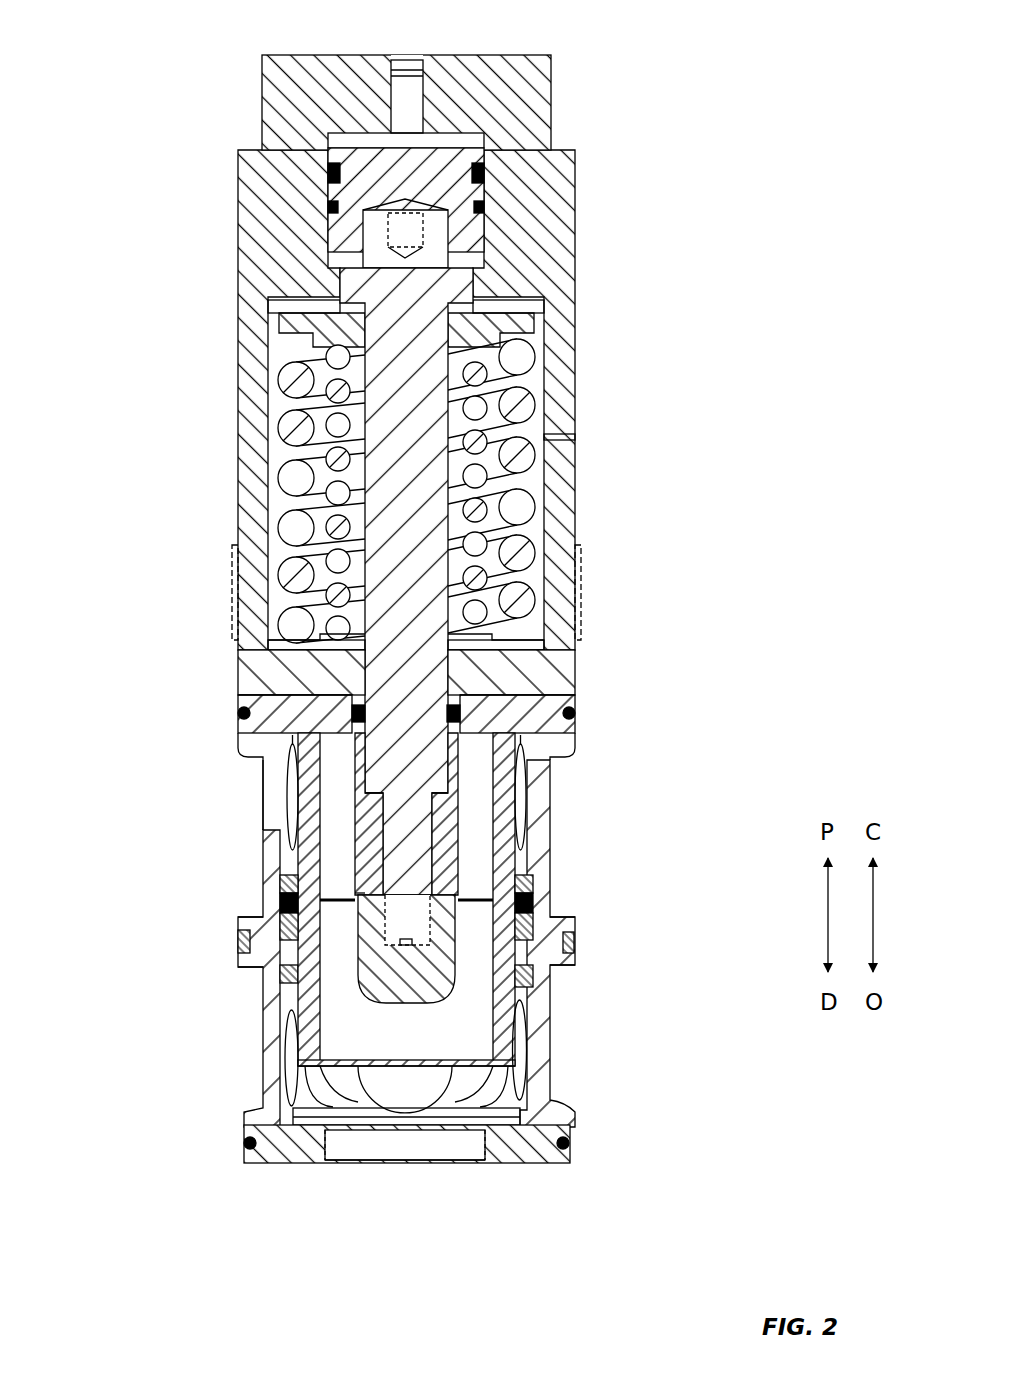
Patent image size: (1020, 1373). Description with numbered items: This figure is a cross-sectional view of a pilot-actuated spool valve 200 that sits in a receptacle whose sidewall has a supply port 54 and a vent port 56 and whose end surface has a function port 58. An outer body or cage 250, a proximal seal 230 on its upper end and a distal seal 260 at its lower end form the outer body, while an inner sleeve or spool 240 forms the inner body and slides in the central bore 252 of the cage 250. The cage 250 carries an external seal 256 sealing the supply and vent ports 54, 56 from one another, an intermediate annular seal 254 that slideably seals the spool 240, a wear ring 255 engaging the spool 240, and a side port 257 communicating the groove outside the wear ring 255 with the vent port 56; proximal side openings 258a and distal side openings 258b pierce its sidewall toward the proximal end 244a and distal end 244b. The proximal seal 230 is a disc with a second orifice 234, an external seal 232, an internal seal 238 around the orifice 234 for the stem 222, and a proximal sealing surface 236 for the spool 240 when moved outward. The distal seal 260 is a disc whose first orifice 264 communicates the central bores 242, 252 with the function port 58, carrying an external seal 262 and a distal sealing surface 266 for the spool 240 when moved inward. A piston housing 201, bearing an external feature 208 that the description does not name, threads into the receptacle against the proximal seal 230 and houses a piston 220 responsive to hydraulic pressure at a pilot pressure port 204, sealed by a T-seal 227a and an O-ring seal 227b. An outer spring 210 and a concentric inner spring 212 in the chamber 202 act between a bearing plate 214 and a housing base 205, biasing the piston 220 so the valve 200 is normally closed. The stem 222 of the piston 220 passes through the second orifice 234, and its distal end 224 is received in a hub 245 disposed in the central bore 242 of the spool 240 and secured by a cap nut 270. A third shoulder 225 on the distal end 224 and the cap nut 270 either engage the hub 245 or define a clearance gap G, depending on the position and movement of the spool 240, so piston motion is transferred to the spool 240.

The spool valve 200 is at (594, 146).
The piston housing 201 is at (262, 127).
The chamber 202 is at (275, 510).
The pilot pressure port 204 is at (408, 55).
The housing base 205 is at (580, 657).
The sleeve 208 is at (236, 582).
The outer spring 210 is at (283, 427).
The inner spring 212 is at (322, 390).
The bearing plate 214 is at (545, 318).
The piston 220 is at (490, 236).
The stem 222 is at (448, 457).
The distal end 224 is at (440, 943).
The third shoulder 225 is at (452, 796).
The T-seal 227a is at (330, 173).
The O-ring seal 227b is at (330, 206).
The proximal seal 230 is at (575, 699).
The external seal 232 is at (240, 712).
The second orifice 234 is at (450, 690).
The proximal sealing surface 236 is at (300, 737).
The internal seal 238 is at (350, 712).
The spool 240 is at (550, 1008).
The central bore 242 is at (373, 1043).
The proximal end 244a is at (548, 735).
The distal end 244b is at (550, 1082).
The hub 245 is at (460, 837).
The cage 250 is at (550, 867).
The central bore 252 is at (293, 813).
The intermediate annular seal 254 is at (282, 897).
The wear ring 255 is at (535, 972).
The external seal 256 is at (253, 927).
The side port 257 is at (293, 980).
The proximal side opening 258a is at (552, 795).
The distal side opening 258b is at (530, 1043).
The distal seal 260 is at (537, 1165).
The external seal 262 is at (247, 1143).
The first orifice 264 is at (380, 1163).
The distal sealing surface 266 is at (550, 1107).
The cap nut 270 is at (548, 912).
The clearance gap G is at (357, 893).
The supply port 54 is at (228, 830).
The vent port 56 is at (228, 1035).
The function port 58 is at (411, 1200).